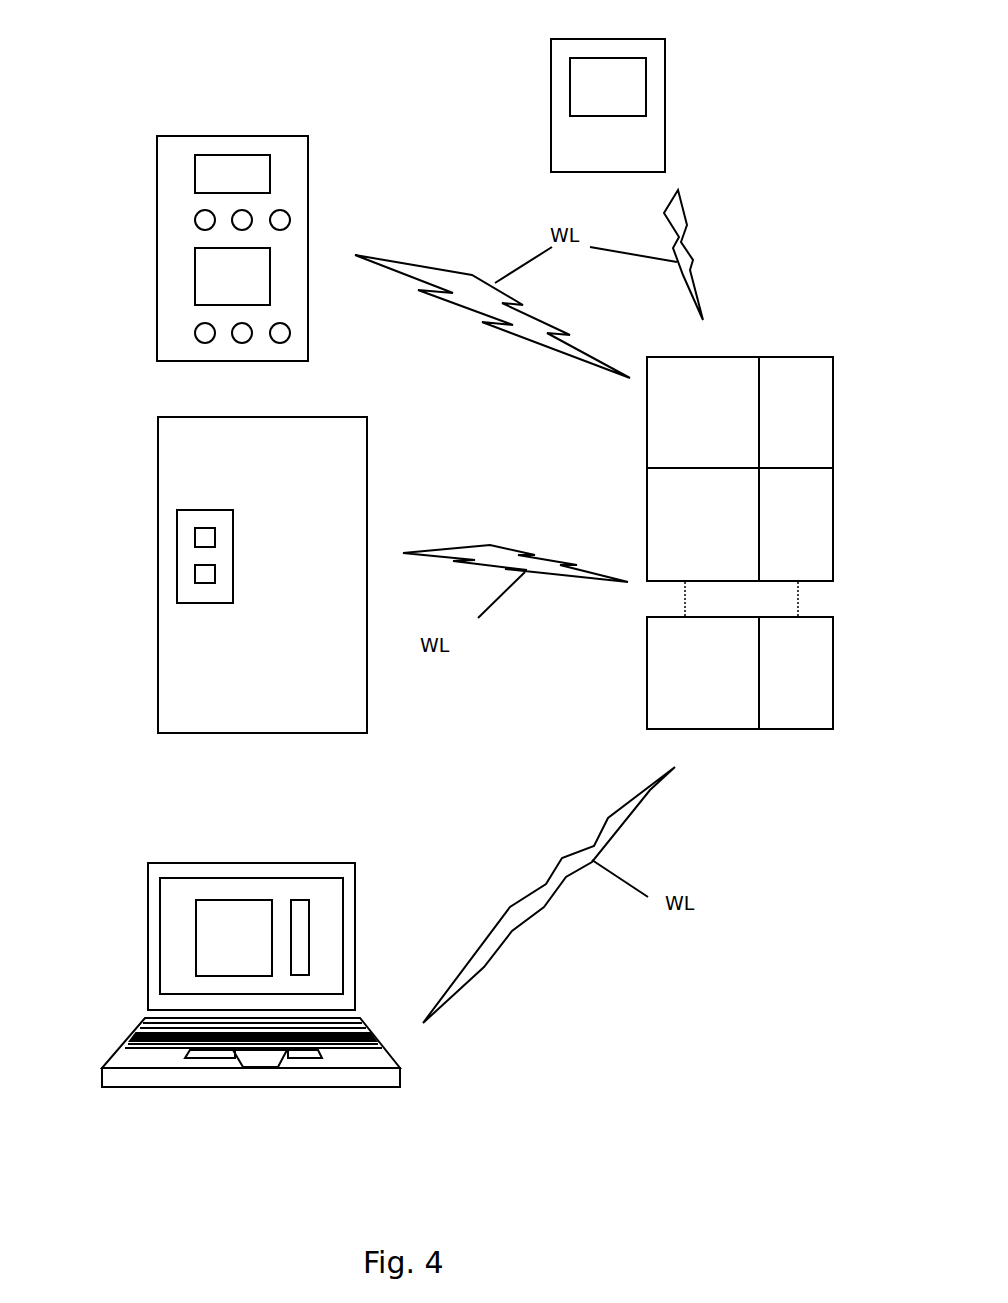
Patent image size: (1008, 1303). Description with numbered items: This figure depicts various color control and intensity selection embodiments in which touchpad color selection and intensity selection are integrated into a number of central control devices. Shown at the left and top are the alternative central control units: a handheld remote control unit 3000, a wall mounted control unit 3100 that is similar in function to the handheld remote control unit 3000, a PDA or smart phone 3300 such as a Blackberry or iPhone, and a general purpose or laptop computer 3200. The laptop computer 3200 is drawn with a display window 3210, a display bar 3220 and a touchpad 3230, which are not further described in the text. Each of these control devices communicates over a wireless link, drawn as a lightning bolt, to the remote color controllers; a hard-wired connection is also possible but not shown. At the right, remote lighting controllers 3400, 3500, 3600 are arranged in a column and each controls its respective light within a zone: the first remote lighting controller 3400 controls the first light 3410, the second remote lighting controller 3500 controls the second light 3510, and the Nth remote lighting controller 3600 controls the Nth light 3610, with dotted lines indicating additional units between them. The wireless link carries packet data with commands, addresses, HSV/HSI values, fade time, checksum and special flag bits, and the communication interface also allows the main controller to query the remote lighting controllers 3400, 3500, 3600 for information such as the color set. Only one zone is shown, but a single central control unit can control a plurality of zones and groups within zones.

The handheld remote control unit 3000 is at (157, 170).
The wall mounted control unit 3100 is at (177, 528).
The laptop computer 3200 is at (177, 862).
The display window 3210 is at (233, 918).
The display control bar 3220 is at (302, 943).
The touchpad 3230 is at (260, 1062).
The PDA or smart phone 3300 is at (552, 113).
The remote lighting controller 3400 is at (647, 432).
The light #1 3410 is at (797, 356).
The remote lighting controller 3500 is at (647, 525).
The light #2 3510 is at (773, 582).
The remote lighting controller 3600 is at (647, 655).
The light #N 3610 is at (797, 730).